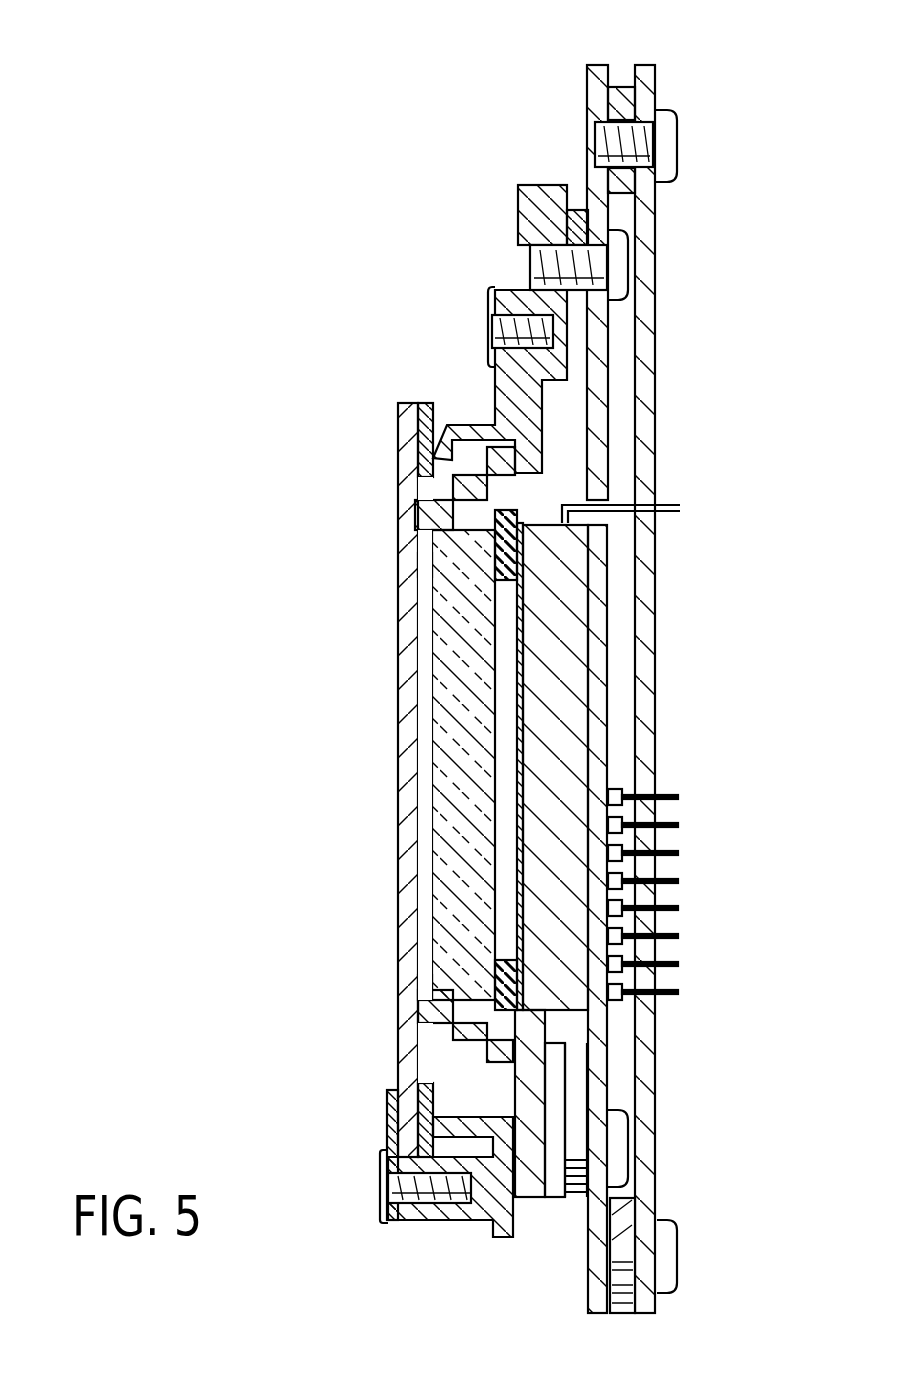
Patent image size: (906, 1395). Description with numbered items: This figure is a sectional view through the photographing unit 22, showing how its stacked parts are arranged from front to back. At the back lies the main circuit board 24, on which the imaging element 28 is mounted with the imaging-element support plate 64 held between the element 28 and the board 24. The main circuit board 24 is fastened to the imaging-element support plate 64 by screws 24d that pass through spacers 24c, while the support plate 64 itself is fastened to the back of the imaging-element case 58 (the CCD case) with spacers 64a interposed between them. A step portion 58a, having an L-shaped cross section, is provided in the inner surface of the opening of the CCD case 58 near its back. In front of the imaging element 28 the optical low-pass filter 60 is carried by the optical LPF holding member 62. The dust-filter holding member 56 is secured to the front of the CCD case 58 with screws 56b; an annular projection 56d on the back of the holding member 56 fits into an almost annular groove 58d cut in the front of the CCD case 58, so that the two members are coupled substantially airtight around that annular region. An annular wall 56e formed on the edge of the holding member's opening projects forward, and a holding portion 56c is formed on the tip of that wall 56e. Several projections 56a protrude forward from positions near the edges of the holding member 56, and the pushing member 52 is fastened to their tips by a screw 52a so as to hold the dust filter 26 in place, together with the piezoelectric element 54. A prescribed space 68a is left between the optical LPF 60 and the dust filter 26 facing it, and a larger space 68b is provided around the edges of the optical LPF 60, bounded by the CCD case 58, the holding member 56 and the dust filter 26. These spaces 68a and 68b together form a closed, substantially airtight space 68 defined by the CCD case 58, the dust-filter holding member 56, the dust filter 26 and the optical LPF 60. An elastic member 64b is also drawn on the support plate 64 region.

The photographing unit 22 is at (555, 1298).
The main circuit board 24 is at (655, 75).
The spacer 24c is at (617, 85).
The screw 24d is at (677, 140).
The dust filter 26 is at (405, 403).
The imaging element 28 is at (556, 748).
The pushing member 52 is at (392, 1128).
The screw 52a is at (388, 1198).
The piezoelectric element 54 is at (428, 403).
The dust-filter holding member 56 is at (505, 300).
The projection 56a is at (440, 1056).
The screw 56b is at (490, 323).
The holding portion 56c is at (432, 470).
The annular projection 56d is at (470, 1195).
The annular wall 56e is at (468, 425).
The imaging-element case 58 is at (530, 186).
The step portion 58a is at (418, 568).
The annular groove 58d is at (522, 1175).
The optical low-pass filter 60 is at (480, 690).
The optical LPF holding member 62 is at (520, 530).
The imaging-element support plate 64 is at (596, 62).
The spacer 64a is at (578, 212).
The elastic member 64b is at (628, 265).
The closed space 68 is at (266, 533).
The space 68a is at (421, 642).
The space 68b is at (420, 488).